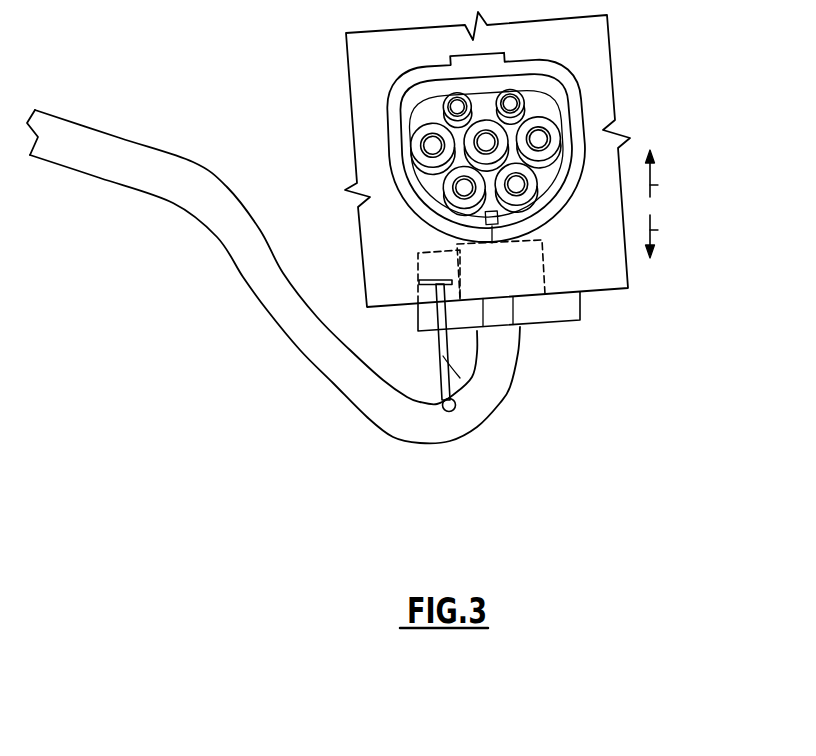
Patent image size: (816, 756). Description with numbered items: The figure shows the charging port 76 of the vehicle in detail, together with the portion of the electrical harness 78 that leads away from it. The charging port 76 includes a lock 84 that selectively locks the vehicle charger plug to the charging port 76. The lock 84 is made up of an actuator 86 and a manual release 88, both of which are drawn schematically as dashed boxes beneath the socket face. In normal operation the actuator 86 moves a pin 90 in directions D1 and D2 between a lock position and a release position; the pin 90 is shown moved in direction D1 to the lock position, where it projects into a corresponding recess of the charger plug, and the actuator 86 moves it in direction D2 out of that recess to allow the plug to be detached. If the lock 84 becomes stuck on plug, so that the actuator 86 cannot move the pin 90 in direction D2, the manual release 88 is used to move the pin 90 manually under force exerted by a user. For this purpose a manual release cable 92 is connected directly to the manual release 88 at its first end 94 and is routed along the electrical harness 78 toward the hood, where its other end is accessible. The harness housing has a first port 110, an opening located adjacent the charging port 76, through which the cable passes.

The charging port 76 is at (600, 98).
The electrical harness 78 is at (132, 156).
The lock 84 is at (552, 243).
The actuator 86 is at (513, 282).
The manual release 88 is at (451, 282).
The pin 90 is at (495, 210).
The manual release cable 92 is at (443, 356).
The first end 94 is at (420, 296).
The first port 110 is at (452, 403).
The first direction D1 is at (658, 185).
The second direction D2 is at (658, 230).